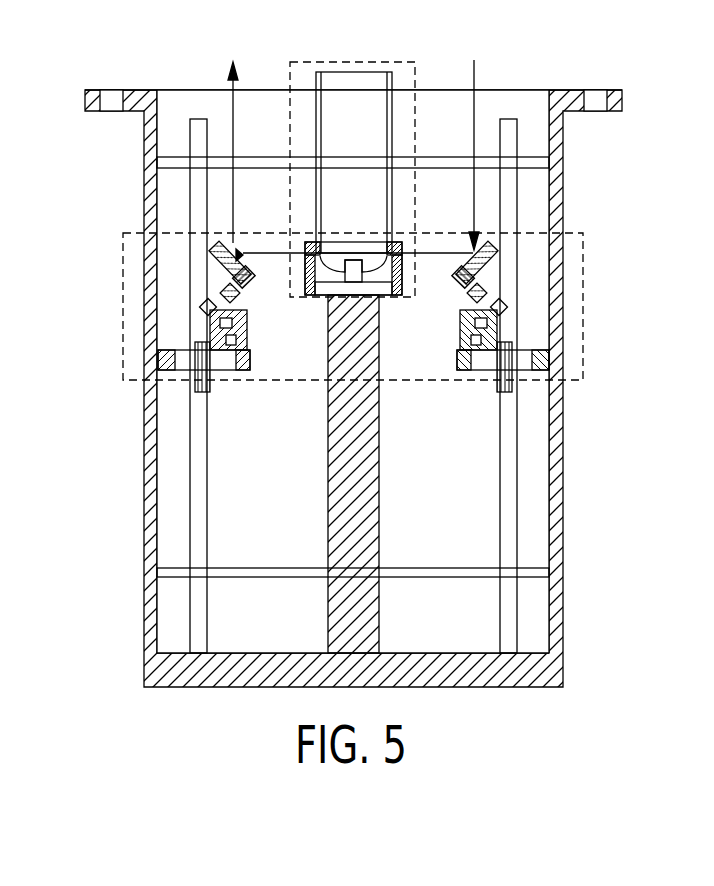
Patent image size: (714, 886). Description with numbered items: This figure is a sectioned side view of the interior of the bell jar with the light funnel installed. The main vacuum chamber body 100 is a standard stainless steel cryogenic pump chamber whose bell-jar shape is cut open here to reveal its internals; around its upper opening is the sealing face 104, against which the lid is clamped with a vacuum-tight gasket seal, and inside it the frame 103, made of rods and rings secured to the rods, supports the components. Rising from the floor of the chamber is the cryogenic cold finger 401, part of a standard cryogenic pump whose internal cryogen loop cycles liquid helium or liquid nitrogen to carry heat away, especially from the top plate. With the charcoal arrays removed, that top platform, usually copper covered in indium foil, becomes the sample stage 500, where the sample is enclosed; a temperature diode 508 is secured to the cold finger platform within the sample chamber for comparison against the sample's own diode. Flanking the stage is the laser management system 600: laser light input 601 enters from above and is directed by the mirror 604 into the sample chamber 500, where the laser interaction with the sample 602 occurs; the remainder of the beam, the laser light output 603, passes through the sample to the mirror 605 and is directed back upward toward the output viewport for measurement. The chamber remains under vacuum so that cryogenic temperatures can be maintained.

The main vacuum chamber 100 is at (148, 168).
The frame 103 is at (480, 573).
The sealing face 104 is at (575, 97).
The cryogenic cold finger 401 is at (347, 490).
The sample stage 500 is at (407, 156).
The temperature diode 508 is at (400, 280).
The laser management system 600 is at (352, 312).
The laser light input 601 is at (474, 80).
The laser interaction with the sample 602 is at (277, 258).
The laser light output 603 is at (233, 90).
The mirror 604 is at (462, 270).
The mirror 605 is at (222, 262).